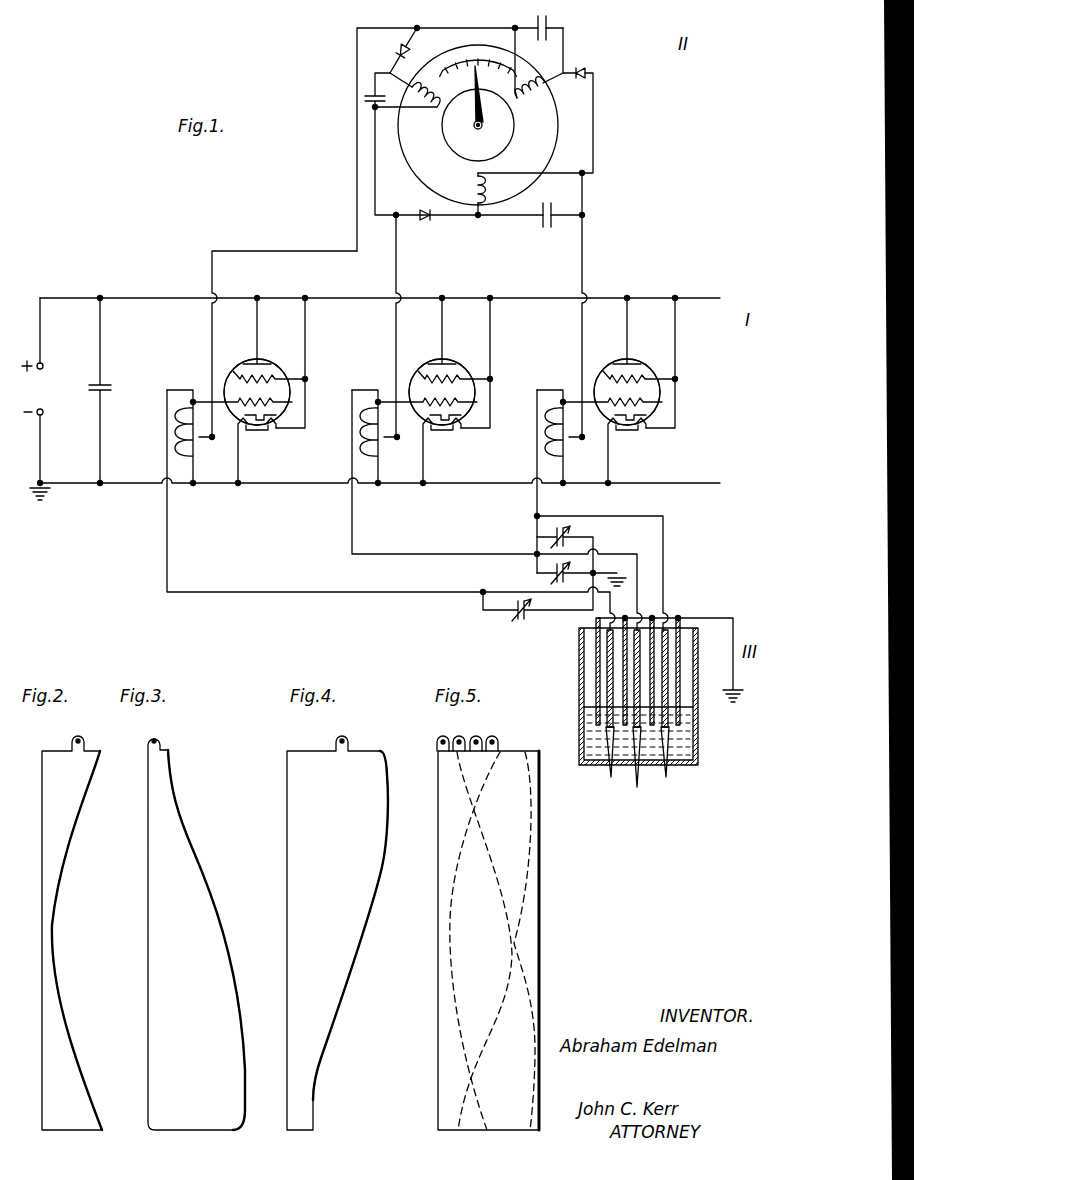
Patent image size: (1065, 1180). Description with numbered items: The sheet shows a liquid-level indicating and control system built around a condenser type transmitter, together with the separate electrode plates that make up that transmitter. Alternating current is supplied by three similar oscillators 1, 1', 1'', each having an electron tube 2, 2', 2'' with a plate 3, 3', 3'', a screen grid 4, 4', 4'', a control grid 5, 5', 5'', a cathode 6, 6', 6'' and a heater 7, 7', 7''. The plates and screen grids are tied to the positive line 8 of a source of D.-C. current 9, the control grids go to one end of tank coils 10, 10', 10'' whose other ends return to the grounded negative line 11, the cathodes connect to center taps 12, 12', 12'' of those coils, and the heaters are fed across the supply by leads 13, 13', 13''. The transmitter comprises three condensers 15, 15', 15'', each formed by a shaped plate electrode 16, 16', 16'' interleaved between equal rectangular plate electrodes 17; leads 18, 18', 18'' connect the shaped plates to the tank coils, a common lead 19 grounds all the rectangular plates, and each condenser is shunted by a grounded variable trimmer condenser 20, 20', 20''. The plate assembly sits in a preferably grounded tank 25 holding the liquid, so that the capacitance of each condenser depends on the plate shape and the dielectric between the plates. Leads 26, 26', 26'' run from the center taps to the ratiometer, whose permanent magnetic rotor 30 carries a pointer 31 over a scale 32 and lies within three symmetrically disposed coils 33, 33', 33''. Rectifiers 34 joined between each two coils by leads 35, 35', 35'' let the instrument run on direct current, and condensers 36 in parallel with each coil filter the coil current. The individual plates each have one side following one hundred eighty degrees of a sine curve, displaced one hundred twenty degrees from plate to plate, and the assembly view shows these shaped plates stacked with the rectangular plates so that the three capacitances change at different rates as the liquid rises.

In FIG. 1, the oscillator 1 is at (257, 412).
In FIG. 1, the oscillator 1' is at (442, 412).
In FIG. 1, the oscillator 1'' is at (627, 412).
In FIG. 1, the electron tube 2 is at (257, 379).
In FIG. 1, the electron tube 2' is at (445, 379).
In FIG. 1, the electron tube 2'' is at (632, 379).
In FIG. 1, the plate 3 is at (252, 330).
In FIG. 1, the plate 3' is at (437, 330).
In FIG. 1, the plate 3'' is at (621, 330).
In FIG. 1, the screen grid 4 is at (261, 366).
In FIG. 1, the screen grid 4' is at (446, 366).
In FIG. 1, the screen grid 4'' is at (630, 366).
In FIG. 1, the control grid 5 is at (259, 395).
In FIG. 1, the control grid 5' is at (446, 395).
In FIG. 1, the control grid 5'' is at (633, 395).
In FIG. 1, the cathode 6 is at (285, 414).
In FIG. 1, the cathode 6' is at (472, 414).
In FIG. 1, the cathode 6'' is at (659, 414).
In FIG. 1, the heater 7 is at (260, 452).
In FIG. 1, the heater 7' is at (447, 452).
In FIG. 1, the heater 7'' is at (634, 452).
In FIG. 1, the positive line 8 is at (84, 297).
In FIG. 1, the source of D.-C. current 9 is at (38, 395).
In FIG. 1, the tank coil 10 is at (161, 438).
In FIG. 1, the tank coil 10' is at (353, 438).
In FIG. 1, the tank coil 10'' is at (537, 438).
In FIG. 1, the grounded negative line 11 is at (148, 485).
In FIG. 1, the center tap 12 is at (214, 456).
In FIG. 1, the center tap 12' is at (401, 456).
In FIG. 1, the center tap 12'' is at (589, 456).
In FIG. 1, the lead 13 is at (308, 362).
In FIG. 1, the lead 13' is at (495, 362).
In FIG. 1, the lead 13'' is at (682, 362).
In FIG. 1, the condenser 15 is at (602, 761).
In FIG. 1, the condenser 15' is at (647, 763).
In FIG. 1, the condenser 15'' is at (682, 760).
In FIG. 1, the plate electrode 16 is at (575, 678).
In FIG. 2, the plate electrode 16 is at (72, 933).
In FIG. 5, the plate electrode 16 is at (446, 941).
In FIG. 1, the plate electrode 16' is at (589, 678).
In FIG. 3, the plate electrode 16' is at (196, 934).
In FIG. 5, the plate electrode 16' is at (516, 941).
In FIG. 1, the plate electrode 16'' is at (698, 678).
In FIG. 4, the plate electrode 16'' is at (355, 933).
In FIG. 5, the plate electrode 16'' is at (551, 941).
In FIG. 1, the plate electrode 17 is at (625, 648).
In FIG. 5, the plate electrode 17 is at (535, 945).
In FIG. 1, the lead 18 is at (391, 510).
In FIG. 1, the lead 18' is at (497, 510).
In FIG. 1, the lead 18'' is at (576, 510).
In FIG. 1, the common lead 19 is at (653, 617).
In FIG. 1, the variable trimmer condenser 20 is at (528, 604).
In FIG. 1, the variable trimmer condenser 20' is at (564, 576).
In FIG. 1, the variable trimmer condenser 20'' is at (552, 549).
In FIG. 1, the tank 25 is at (700, 736).
In FIG. 1, the lead 26 is at (284, 344).
In FIG. 1, the lead 26' is at (419, 325).
In FIG. 1, the lead 26'' is at (608, 304).
In FIG. 1, the permanent magnetic rotor 30 is at (507, 147).
In FIG. 1, the pointer 31 is at (470, 128).
In FIG. 1, the scale 32 is at (444, 66).
In FIG. 1, the coil 33 is at (539, 102).
In FIG. 1, the coil 33' is at (407, 105).
In FIG. 1, the coil 33'' is at (461, 191).
In FIG. 1, the rectifier 34 is at (590, 62).
In FIG. 1, the lead 35 is at (460, 127).
In FIG. 1, the lead 35' is at (478, 121).
In FIG. 1, the lead 35'' is at (558, 100).
In FIG. 1, the condenser 36 is at (547, 16).